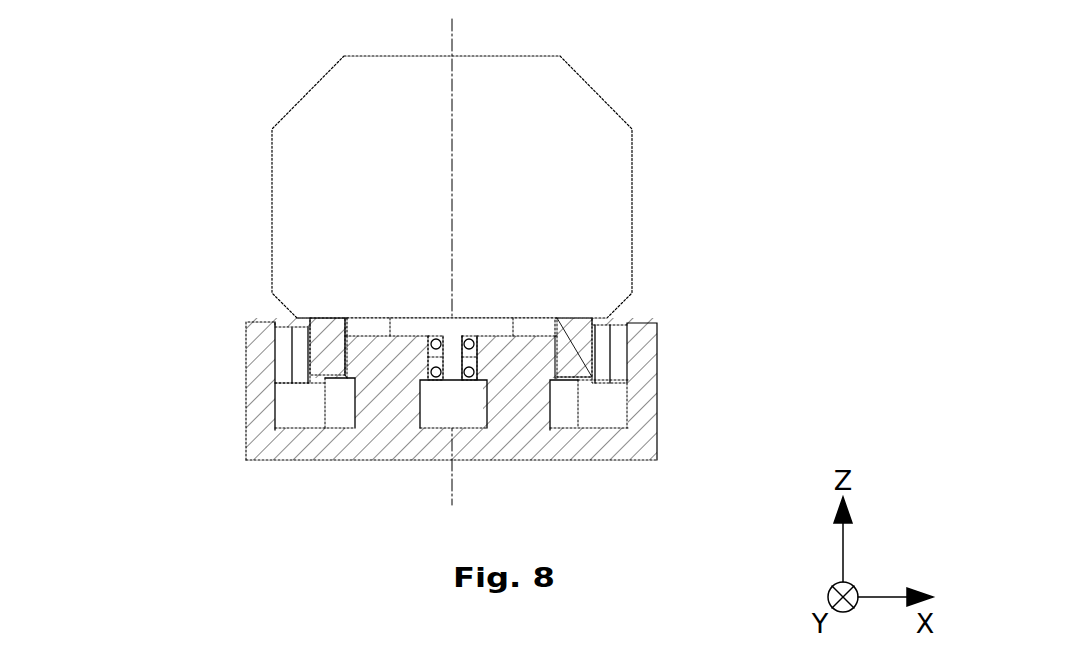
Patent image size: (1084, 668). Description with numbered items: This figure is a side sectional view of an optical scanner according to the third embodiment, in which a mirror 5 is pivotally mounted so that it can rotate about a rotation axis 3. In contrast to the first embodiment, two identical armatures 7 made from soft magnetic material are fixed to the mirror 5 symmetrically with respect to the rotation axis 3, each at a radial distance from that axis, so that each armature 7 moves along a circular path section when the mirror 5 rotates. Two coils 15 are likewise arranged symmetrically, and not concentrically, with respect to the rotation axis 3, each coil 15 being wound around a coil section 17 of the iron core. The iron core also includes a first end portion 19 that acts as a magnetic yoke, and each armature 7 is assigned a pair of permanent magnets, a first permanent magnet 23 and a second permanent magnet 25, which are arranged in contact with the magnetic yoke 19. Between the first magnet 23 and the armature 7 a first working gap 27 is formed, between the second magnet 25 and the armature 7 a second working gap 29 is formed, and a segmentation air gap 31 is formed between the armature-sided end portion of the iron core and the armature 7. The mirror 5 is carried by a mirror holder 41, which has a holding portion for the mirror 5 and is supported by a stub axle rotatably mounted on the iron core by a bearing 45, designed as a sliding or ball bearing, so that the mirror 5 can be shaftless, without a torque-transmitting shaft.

The rotation axis 3 is at (452, 20).
The mirror 5 is at (523, 187).
The armature 7 is at (456, 286).
The coil 15 is at (457, 452).
The coil section 17 is at (457, 439).
The first end portion 19 is at (709, 391).
The first permanent magnet 23 is at (456, 345).
The second permanent magnet 25 is at (451, 354).
The first working gap 27 is at (456, 339).
The second working gap 29 is at (451, 347).
The segmentation air gap 31 is at (457, 410).
The mirror holder 41 is at (610, 256).
The bearing 45 is at (297, 401).